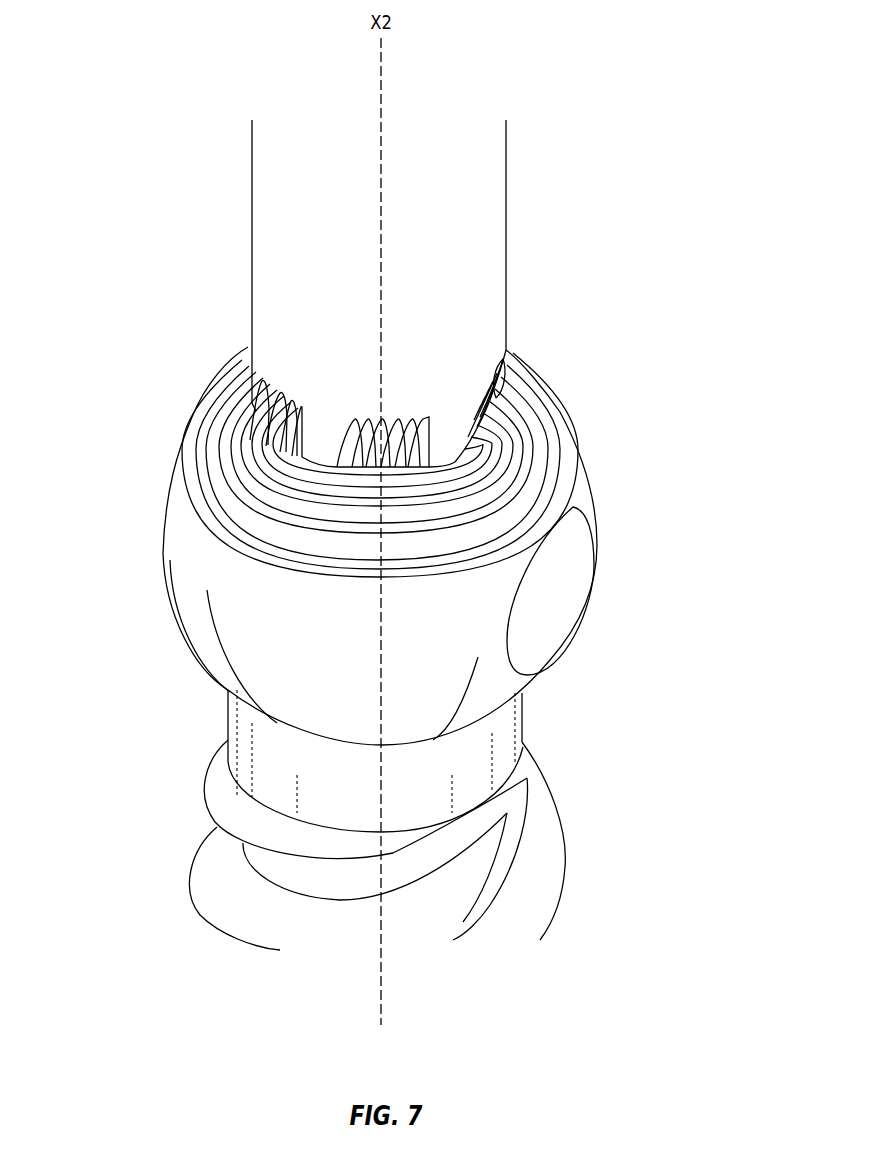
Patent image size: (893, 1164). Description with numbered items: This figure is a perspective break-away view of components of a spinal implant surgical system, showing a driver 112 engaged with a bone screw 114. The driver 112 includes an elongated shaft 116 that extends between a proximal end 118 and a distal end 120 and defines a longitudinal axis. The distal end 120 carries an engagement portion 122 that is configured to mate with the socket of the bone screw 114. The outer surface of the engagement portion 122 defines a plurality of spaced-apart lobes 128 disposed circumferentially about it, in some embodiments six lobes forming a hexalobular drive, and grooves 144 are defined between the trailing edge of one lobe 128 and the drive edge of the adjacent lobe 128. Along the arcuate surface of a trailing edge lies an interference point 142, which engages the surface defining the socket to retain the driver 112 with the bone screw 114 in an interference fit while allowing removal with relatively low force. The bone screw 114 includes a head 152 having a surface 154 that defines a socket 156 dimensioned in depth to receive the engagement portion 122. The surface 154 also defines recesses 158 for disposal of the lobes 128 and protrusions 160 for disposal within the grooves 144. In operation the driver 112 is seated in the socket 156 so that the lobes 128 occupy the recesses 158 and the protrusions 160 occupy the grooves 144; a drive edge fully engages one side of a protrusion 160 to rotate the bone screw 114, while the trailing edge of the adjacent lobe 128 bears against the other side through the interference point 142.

The driver 112 is at (605, 215).
The bone screw 114 is at (605, 805).
The elongated shaft 116 is at (270, 153).
The proximal end 118 is at (465, 142).
The distal end 120 is at (252, 405).
The engagement portion 122 is at (515, 360).
The lobe 128 is at (445, 430).
The interference point 142 is at (500, 466).
The groove 144 is at (353, 440).
The head 152 is at (252, 624).
The surface 154 is at (300, 440).
The socket 156 is at (335, 462).
The recess 158 is at (330, 455).
The protrusion 160 is at (305, 436).